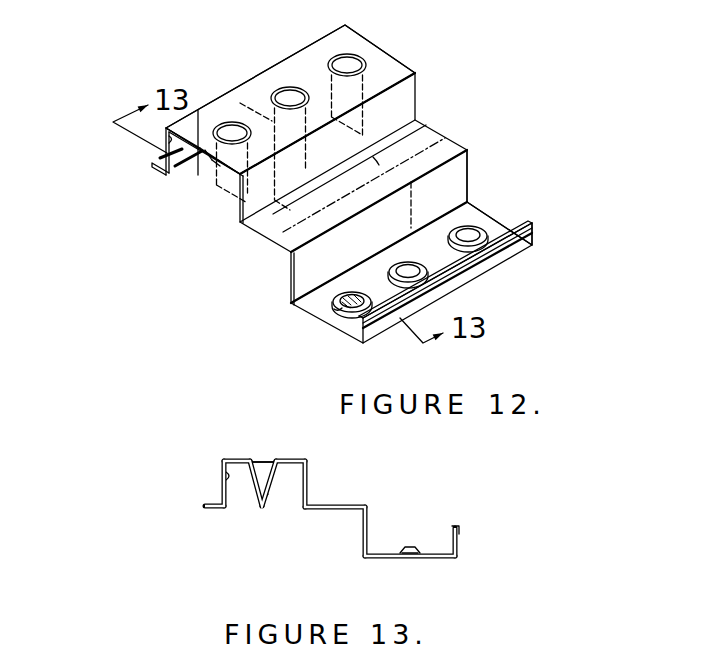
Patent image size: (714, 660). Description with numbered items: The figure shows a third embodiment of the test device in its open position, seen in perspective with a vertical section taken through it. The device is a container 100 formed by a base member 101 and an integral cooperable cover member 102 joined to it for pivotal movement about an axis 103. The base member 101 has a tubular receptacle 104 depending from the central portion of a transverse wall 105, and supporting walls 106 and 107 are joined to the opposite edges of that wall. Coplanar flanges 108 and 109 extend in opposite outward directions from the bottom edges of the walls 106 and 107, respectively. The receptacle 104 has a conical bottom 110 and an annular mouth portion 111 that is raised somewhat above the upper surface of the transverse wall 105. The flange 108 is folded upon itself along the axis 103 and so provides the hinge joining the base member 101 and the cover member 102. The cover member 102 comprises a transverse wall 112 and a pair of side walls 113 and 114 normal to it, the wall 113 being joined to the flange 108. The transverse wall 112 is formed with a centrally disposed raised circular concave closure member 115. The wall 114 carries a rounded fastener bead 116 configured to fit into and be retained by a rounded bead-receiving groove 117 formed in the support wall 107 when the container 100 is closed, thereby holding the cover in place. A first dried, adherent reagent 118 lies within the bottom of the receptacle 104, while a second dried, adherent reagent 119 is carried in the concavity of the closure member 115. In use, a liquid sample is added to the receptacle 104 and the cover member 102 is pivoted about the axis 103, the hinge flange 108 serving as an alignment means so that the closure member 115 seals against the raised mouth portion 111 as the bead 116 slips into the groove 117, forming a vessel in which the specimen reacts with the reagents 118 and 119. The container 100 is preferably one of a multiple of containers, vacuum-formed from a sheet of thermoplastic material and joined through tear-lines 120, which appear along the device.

In FIG. 12, the container 100 is at (513, 123).
In FIG. 13, the container 100 is at (457, 483).
In FIG. 12, the base member 101 is at (388, 46).
In FIG. 13, the base member 101 is at (218, 460).
In FIG. 12, the cover member 102 is at (470, 173).
In FIG. 13, the cover member 102 is at (460, 563).
In FIG. 12, the axis 103 is at (258, 222).
In FIG. 13, the axis 103 is at (338, 513).
In FIG. 12, the tubular receptacle 104 is at (217, 161).
In FIG. 13, the tubular receptacle 104 is at (252, 487).
In FIG. 12, the transverse wall 105 is at (224, 105).
In FIG. 13, the transverse wall 105 is at (233, 459).
In FIG. 12, the supporting wall 106 is at (238, 214).
In FIG. 13, the supporting wall 106 is at (308, 475).
In FIG. 12, the supporting wall 107 is at (172, 157).
In FIG. 13, the supporting wall 107 is at (222, 488).
In FIG. 12, the flange 108 is at (272, 227).
In FIG. 13, the flange 108 is at (327, 512).
In FIG. 12, the flange 109 is at (157, 172).
In FIG. 13, the flange 109 is at (210, 510).
In FIG. 12, the conical bottom 110 is at (218, 178).
In FIG. 13, the conical bottom 110 is at (273, 497).
In FIG. 12, the annular mouth portion 111 is at (215, 127).
In FIG. 13, the annular mouth portion 111 is at (273, 459).
In FIG. 12, the transverse wall 112 is at (307, 305).
In FIG. 13, the transverse wall 112 is at (372, 558).
In FIG. 12, the side wall 113 is at (290, 278).
In FIG. 13, the side wall 113 is at (370, 518).
In FIG. 12, the side wall 114 is at (390, 345).
In FIG. 13, the side wall 114 is at (457, 543).
In FIG. 12, the closure member 115 is at (333, 313).
In FIG. 13, the closure member 115 is at (407, 558).
In FIG. 12, the fastener bead 116 is at (397, 331).
In FIG. 13, the fastener bead 116 is at (445, 517).
In FIG. 12, the bead-receiving groove 117 is at (168, 137).
In FIG. 13, the bead-receiving groove 117 is at (224, 477).
In FIG. 13, the first dried, adherent reagent 118 is at (263, 500).
In FIG. 12, the second dried, adherent reagent 119 is at (350, 309).
In FIG. 13, the second dried, adherent reagent 119 is at (407, 547).
In FIG. 12, the tear-lines 120 is at (240, 103).